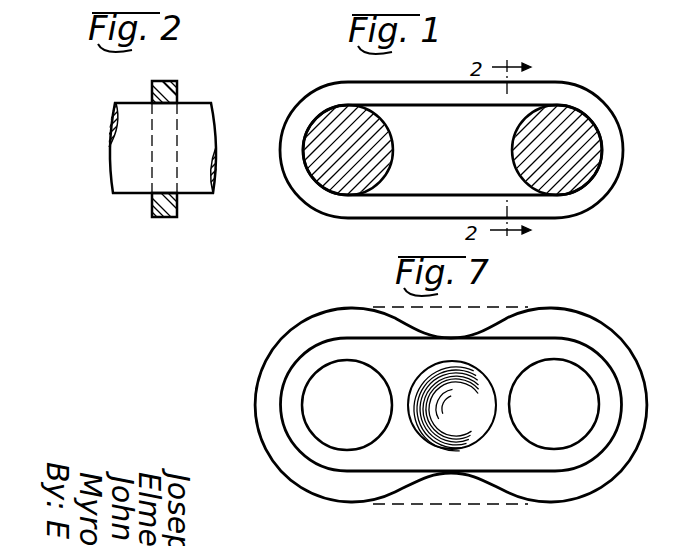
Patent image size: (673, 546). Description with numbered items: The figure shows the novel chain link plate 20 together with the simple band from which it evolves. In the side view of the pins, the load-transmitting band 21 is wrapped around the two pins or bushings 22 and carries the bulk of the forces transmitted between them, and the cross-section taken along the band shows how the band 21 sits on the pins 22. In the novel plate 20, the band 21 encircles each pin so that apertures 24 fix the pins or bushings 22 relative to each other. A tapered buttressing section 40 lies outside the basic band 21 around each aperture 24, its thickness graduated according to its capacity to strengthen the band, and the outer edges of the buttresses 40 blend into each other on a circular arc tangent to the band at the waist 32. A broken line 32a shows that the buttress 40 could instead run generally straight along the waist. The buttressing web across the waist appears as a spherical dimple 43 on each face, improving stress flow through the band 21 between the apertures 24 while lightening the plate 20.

In FIG. 7, the link plate 20 is at (272, 333).
In FIG. 2, the load-transmitting band 21 is at (177, 89).
In FIG. 1, the load-transmitting band 21 is at (367, 83).
In FIG. 2, the pins or bushings 22 is at (114, 126).
In FIG. 1, the pins or bushings 22 is at (518, 146).
In FIG. 7, the apertures 24 is at (304, 395).
In FIG. 7, the tangent point on waist 32 is at (447, 337).
In FIG. 7, the broken line 32a is at (453, 503).
In FIG. 7, the tapered buttressing section 40 is at (563, 320).
In FIG. 7, the dimple 43 is at (480, 427).